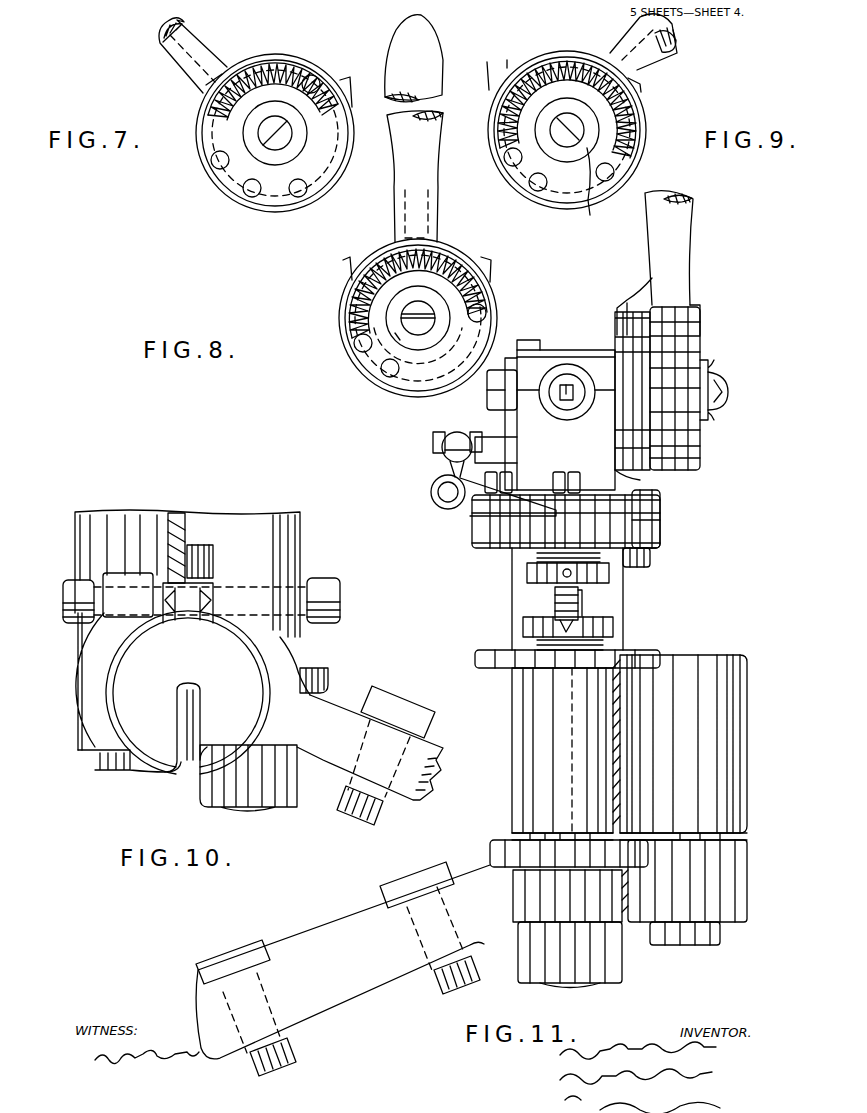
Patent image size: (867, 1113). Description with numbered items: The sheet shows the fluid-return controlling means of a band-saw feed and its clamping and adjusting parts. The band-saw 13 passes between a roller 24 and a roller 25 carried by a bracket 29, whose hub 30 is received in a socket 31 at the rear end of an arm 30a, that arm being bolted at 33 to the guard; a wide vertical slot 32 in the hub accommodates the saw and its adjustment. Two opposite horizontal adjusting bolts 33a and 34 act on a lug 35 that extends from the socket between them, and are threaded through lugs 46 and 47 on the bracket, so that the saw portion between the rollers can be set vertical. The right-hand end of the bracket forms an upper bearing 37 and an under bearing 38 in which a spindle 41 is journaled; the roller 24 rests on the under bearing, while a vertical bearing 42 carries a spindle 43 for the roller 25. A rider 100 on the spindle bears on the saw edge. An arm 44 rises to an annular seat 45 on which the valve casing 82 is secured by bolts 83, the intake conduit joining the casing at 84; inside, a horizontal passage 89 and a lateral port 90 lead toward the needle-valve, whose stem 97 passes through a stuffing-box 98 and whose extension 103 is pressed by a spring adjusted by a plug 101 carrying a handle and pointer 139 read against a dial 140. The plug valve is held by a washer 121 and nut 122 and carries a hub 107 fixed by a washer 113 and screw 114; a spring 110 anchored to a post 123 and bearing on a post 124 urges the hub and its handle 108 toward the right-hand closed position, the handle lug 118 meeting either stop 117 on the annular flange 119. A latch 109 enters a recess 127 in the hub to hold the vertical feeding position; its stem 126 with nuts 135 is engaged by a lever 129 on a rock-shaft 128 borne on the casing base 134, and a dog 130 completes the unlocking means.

In FIG. 11, the band-saw 13 is at (645, 940).
In FIG. 10, the band-saw 13 is at (200, 719).
In FIG. 11, the roller 24 is at (567, 896).
In FIG. 10, the roller 24 is at (186, 770).
In FIG. 11, the roller 25 is at (684, 881).
In FIG. 10, the roller 25 is at (165, 770).
In FIG. 10, the bracket 29 is at (181, 514).
In FIG. 10, the hub 30 is at (188, 692).
In FIG. 10, the arm 30a is at (178, 711).
In FIG. 10, the socket 31 is at (80, 693).
In FIG. 11, the slot 32 is at (343, 962).
In FIG. 10, the slot 32 is at (370, 734).
In FIG. 11, the bolts 33 is at (412, 884).
In FIG. 10, the bolts 33 is at (384, 801).
In FIG. 10, the adjusting bolt 33a is at (70, 588).
In FIG. 10, the adjusting bolt 34 is at (318, 578).
In FIG. 10, the lug 35 is at (172, 578).
In FIG. 11, the upper bearing 37 is at (562, 750).
In FIG. 11, the under bearing 38 is at (570, 955).
In FIG. 10, the under bearing 38 is at (248, 778).
In FIG. 11, the spindle 41 is at (576, 830).
In FIG. 11, the vertical bearing 42 is at (680, 744).
In FIG. 11, the spindle 43 is at (726, 830).
In FIG. 10, the arm 44 is at (300, 533).
In FIG. 11, the annular seat 45 is at (661, 529).
In FIG. 10, the lug 46 is at (122, 573).
In FIG. 10, the lug 47 is at (215, 561).
In FIG. 11, the valve casing 82 is at (560, 420).
In FIG. 11, the bolts 83 is at (512, 481).
In FIG. 11, the intake connection 84 is at (566, 385).
In FIG. 11, the horizontal passage 89 is at (576, 374).
In FIG. 11, the lateral port 90 is at (573, 399).
In FIG. 11, the needle-valve stem 97 is at (579, 586).
In FIG. 11, the stuffing-box 98 is at (532, 556).
In FIG. 11, the rider 100 is at (490, 850).
In FIG. 11, the adjustable plug 101 is at (523, 628).
In FIG. 11, the extension 103 is at (555, 598).
In FIG. 7, the hub 107 is at (236, 204).
In FIG. 9, the hub 107 is at (522, 200).
In FIG. 8, the hub 107 is at (418, 318).
In FIG. 11, the hub 107 is at (701, 461).
In FIG. 7, the handle 108 is at (164, 46).
In FIG. 9, the handle 108 is at (660, 56).
In FIG. 8, the handle 108 is at (443, 95).
In FIG. 11, the handle 108 is at (690, 237).
In FIG. 7, the latch 109 is at (248, 210).
In FIG. 9, the latch 109 is at (567, 130).
In FIG. 8, the latch 109 is at (376, 386).
In FIG. 7, the spring 110 is at (290, 63).
In FIG. 9, the spring 110 is at (640, 136).
In FIG. 8, the spring 110 is at (380, 256).
In FIG. 9, the washer 113 is at (590, 210).
In FIG. 8, the washer 113 is at (395, 334).
In FIG. 11, the washer 113 is at (716, 373).
In FIG. 7, the screw 114 is at (285, 136).
In FIG. 9, the screw 114 is at (580, 128).
In FIG. 8, the screw 114 is at (432, 329).
In FIG. 11, the screw 114 is at (722, 398).
In FIG. 7, the stops 117 is at (204, 88).
In FIG. 9, the stops 117 is at (649, 84).
In FIG. 8, the stops 117 is at (343, 268).
In FIG. 11, the stops 117 is at (641, 333).
In FIG. 7, the lug 118 is at (218, 58).
In FIG. 9, the lug 118 is at (626, 50).
In FIG. 8, the lug 118 is at (431, 222).
In FIG. 11, the lug 118 is at (627, 288).
In FIG. 11, the annular flange 119 is at (625, 476).
In FIG. 11, the washer 121 is at (520, 349).
In FIG. 11, the nut 122 is at (487, 389).
In FIG. 7, the post 123 is at (210, 161).
In FIG. 9, the post 123 is at (504, 163).
In FIG. 8, the post 123 is at (354, 344).
In FIG. 7, the post 124 is at (316, 80).
In FIG. 9, the post 124 is at (615, 172).
In FIG. 8, the post 124 is at (486, 306).
In FIG. 11, the stem 126 is at (491, 448).
In FIG. 7, the recess 127 is at (307, 190).
In FIG. 9, the recess 127 is at (500, 150).
In FIG. 11, the rock-shaft 128 is at (448, 492).
In FIG. 11, the lever 129 is at (452, 452).
In FIG. 11, the dog 130 is at (459, 514).
In FIG. 11, the base 134 is at (662, 509).
In FIG. 11, the nuts 135 is at (449, 436).
In FIG. 11, the combined handle and pointer 139 is at (582, 610).
In FIG. 11, the dial 140 is at (475, 656).